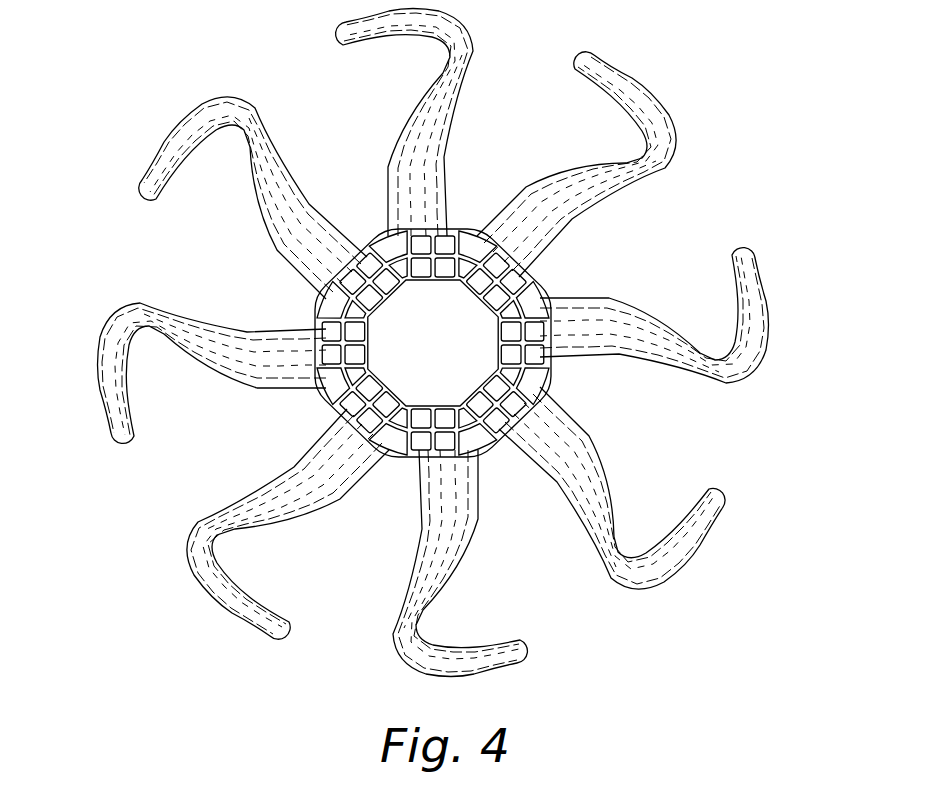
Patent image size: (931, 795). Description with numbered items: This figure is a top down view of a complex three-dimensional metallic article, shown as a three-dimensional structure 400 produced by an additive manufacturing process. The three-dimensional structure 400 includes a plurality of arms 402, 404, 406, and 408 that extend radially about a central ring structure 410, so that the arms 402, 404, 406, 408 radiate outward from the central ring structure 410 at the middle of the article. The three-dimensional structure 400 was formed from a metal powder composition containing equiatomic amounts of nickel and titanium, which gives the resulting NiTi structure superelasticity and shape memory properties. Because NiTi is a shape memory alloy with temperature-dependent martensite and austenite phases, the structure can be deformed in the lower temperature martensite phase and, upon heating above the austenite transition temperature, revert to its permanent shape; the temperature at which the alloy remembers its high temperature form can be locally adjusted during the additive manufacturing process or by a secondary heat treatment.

The three-dimensional structure 400 is at (128, 72).
The arm 402 is at (153, 183).
The arm 404 is at (362, 30).
The arm 406 is at (760, 302).
The arm 408 is at (613, 73).
The central ring structure 410 is at (560, 280).